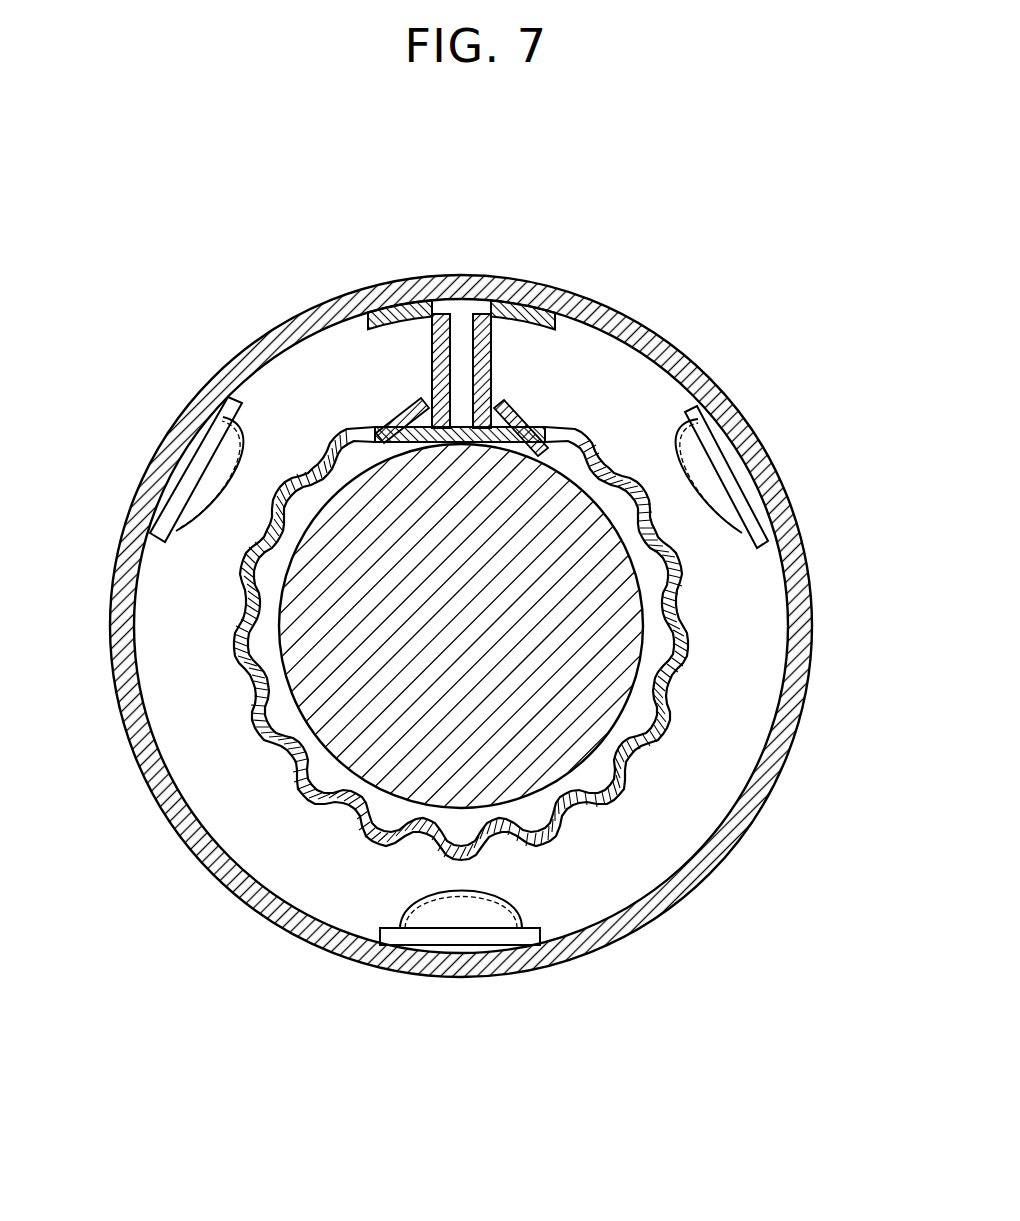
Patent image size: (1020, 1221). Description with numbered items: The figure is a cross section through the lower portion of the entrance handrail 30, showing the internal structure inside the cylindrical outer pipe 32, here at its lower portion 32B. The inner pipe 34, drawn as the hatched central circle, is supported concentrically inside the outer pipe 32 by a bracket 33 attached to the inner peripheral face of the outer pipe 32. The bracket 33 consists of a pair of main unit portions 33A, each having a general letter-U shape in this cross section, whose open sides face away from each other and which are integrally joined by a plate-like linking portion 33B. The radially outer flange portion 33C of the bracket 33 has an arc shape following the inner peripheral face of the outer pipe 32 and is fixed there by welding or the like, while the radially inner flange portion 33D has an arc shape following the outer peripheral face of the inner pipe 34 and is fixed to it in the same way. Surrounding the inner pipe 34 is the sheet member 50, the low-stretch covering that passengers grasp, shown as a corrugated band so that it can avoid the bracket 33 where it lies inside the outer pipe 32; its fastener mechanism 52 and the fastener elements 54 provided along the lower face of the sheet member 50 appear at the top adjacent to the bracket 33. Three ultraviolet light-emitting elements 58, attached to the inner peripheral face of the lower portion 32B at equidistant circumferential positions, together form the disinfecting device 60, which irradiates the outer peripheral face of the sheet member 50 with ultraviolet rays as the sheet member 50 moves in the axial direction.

The entrance handrail 30 is at (155, 332).
The outer pipe 32 is at (511, 626).
The lower portion 32B is at (814, 628).
The bracket 33 is at (431, 353).
The main unit portion 33A is at (458, 345).
The linking portion 33B is at (421, 303).
The flange portion 33C is at (540, 299).
The flange portion 33D is at (385, 408).
The inner pipe 34 is at (296, 706).
The sheet member 50 is at (692, 690).
The fastener mechanism 52 is at (411, 387).
The elements 54 is at (497, 407).
The light-emitting element 58 is at (238, 458).
The disinfecting device 60 is at (188, 545).